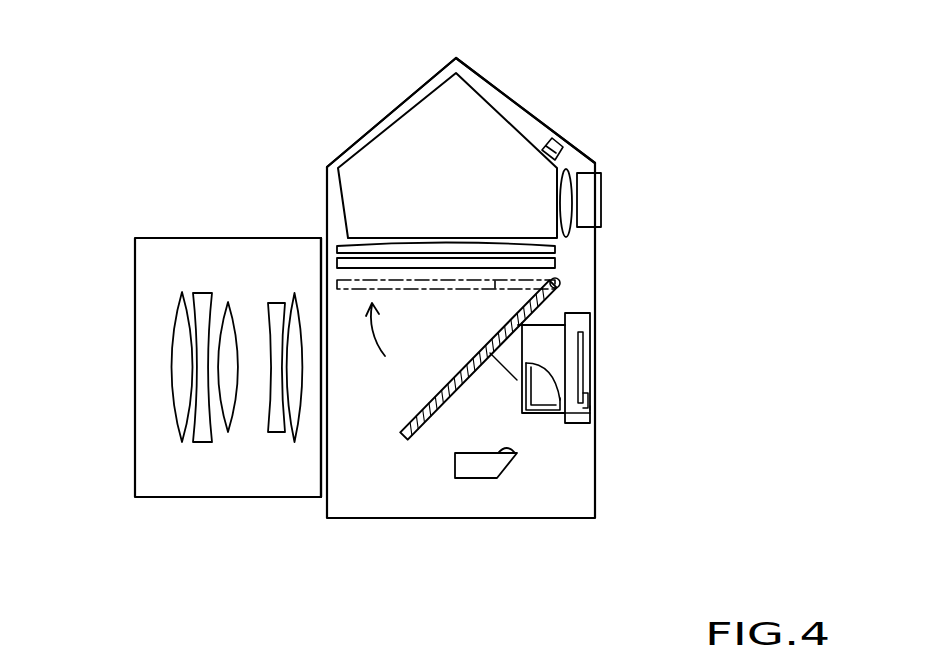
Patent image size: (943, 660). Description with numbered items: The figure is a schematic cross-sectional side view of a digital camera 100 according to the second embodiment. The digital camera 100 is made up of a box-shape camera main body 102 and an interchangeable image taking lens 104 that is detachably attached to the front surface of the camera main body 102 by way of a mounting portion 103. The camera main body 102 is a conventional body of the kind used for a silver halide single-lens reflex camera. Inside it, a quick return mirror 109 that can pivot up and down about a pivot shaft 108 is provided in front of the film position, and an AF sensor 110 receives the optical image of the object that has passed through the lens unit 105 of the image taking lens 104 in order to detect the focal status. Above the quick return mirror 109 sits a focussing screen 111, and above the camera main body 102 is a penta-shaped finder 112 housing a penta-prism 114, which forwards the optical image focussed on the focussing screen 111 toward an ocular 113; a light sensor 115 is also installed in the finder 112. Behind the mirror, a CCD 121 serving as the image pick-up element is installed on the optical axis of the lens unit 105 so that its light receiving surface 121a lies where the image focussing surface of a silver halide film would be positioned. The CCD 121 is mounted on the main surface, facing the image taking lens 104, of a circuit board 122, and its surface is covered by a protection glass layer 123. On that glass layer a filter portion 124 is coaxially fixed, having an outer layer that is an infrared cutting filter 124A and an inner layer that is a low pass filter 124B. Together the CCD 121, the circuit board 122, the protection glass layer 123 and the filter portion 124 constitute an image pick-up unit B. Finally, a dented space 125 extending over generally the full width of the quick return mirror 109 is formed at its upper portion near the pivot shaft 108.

The digital camera 100 is at (326, 140).
The camera main body 102 is at (609, 257).
The mounting portion 103 is at (321, 450).
The interchangeable image taking lens 104 is at (220, 364).
The lens unit 105 is at (202, 442).
The pivot shaft 108 is at (558, 280).
The quick return mirror 109 is at (482, 353).
The AF sensor 110 is at (472, 470).
The focussing screen 111 is at (355, 268).
The penta-shaped finder 112 is at (478, 72).
The ocular 113 is at (566, 200).
The penta-prism 114 is at (493, 123).
The light sensor 115 is at (565, 143).
The CCD 121 is at (626, 375).
The light receiving surface 121a is at (577, 361).
The circuit board 122 is at (573, 422).
The protection glass layer 123 is at (575, 423).
The filter portion 124 is at (557, 495).
The infrared cutting filter 124A is at (538, 410).
The low pass filter 124B is at (543, 397).
The dented space 125 is at (552, 296).
The image pick-up unit B is at (590, 406).